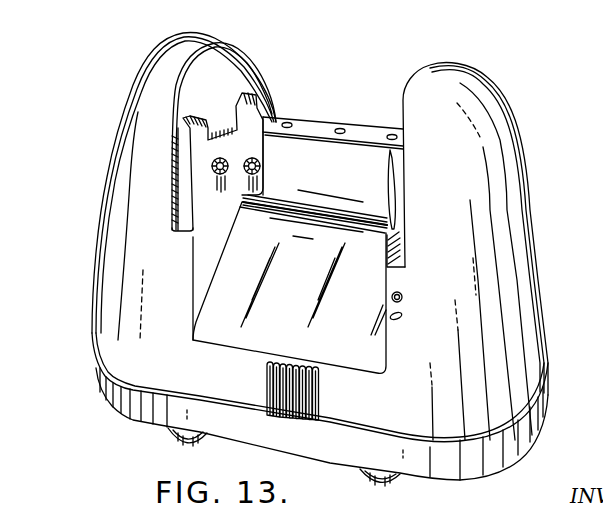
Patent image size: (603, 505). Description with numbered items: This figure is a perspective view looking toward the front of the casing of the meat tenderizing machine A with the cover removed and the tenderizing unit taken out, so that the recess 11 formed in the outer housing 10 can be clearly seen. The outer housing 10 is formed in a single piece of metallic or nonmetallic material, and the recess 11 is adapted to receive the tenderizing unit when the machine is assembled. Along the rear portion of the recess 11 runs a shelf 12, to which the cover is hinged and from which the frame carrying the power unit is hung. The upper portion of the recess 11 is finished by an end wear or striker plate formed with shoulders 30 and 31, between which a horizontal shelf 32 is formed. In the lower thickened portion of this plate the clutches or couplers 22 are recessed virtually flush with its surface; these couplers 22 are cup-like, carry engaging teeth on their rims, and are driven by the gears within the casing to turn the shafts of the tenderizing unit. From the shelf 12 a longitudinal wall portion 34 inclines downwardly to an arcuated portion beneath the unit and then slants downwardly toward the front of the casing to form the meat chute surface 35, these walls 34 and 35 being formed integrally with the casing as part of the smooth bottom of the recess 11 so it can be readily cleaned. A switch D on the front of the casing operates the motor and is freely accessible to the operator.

The outer housing 10 is at (493, 240).
The recess 11 is at (355, 130).
The shelf 12 is at (303, 128).
The clutches or couplers 22 is at (262, 173).
The shoulder 30 is at (198, 147).
The shoulder 31 is at (187, 127).
The horizontal shelf 32 is at (237, 76).
The longitudinal wall portion 34 is at (350, 170).
The meat chute surface 35 is at (230, 297).
The meat tenderizing machine A is at (107, 282).
The switch D is at (403, 297).